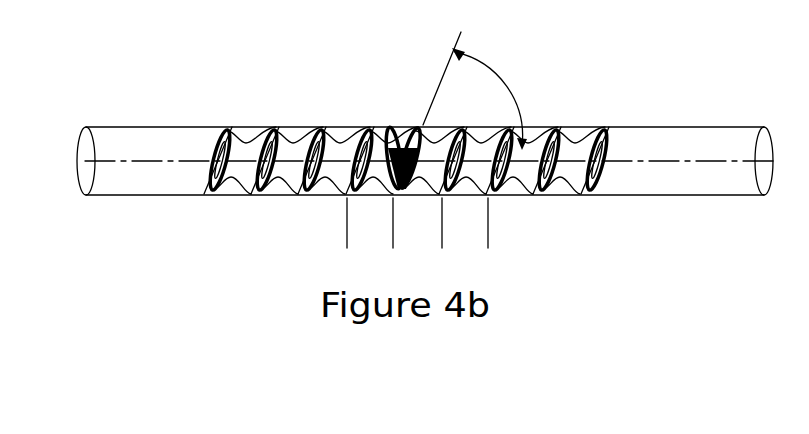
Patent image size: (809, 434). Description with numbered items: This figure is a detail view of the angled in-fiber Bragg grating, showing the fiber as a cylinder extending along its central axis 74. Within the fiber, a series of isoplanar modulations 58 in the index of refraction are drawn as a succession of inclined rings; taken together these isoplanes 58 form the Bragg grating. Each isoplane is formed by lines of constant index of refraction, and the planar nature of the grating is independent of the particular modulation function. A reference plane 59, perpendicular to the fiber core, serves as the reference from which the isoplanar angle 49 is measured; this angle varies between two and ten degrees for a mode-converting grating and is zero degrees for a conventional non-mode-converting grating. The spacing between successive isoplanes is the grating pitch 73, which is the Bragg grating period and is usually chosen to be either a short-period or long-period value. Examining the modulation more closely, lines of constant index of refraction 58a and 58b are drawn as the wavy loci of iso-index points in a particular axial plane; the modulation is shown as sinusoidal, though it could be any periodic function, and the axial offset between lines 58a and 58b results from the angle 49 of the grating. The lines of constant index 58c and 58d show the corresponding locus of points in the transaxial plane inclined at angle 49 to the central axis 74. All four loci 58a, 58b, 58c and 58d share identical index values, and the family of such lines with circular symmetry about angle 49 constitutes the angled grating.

The isoplanar angle 49 is at (482, 91).
The isoplanar modulations 58 is at (458, 197).
The line of constant index of refraction 58a is at (646, 137).
The line of constant index of refraction 58b is at (609, 190).
The line of constant index in the transaxial plane 58c is at (583, 214).
The line of constant index in the transaxial plane 58d is at (561, 240).
The reference plane 59 is at (392, 125).
The grating pitch 73 is at (417, 223).
The central axis 74 is at (443, 205).